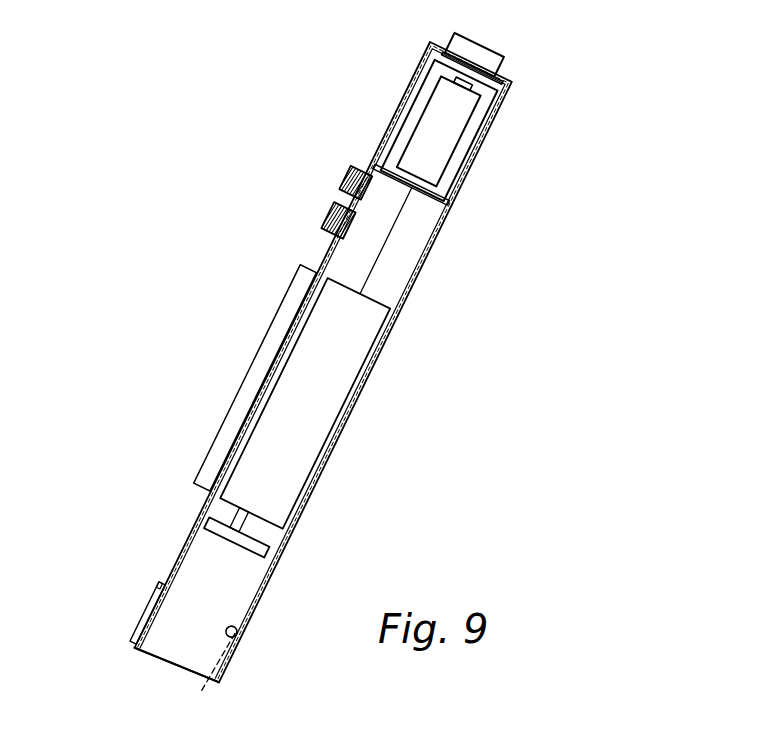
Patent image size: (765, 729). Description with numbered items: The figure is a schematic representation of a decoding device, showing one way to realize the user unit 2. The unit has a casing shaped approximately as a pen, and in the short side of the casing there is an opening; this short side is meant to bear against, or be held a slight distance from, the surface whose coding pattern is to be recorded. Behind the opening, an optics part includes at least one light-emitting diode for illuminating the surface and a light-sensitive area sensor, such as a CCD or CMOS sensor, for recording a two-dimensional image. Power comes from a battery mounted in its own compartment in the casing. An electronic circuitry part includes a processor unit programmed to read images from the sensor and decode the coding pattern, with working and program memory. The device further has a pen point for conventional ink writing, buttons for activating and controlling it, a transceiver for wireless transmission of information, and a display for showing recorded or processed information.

The user unit 2 is at (538, 236).